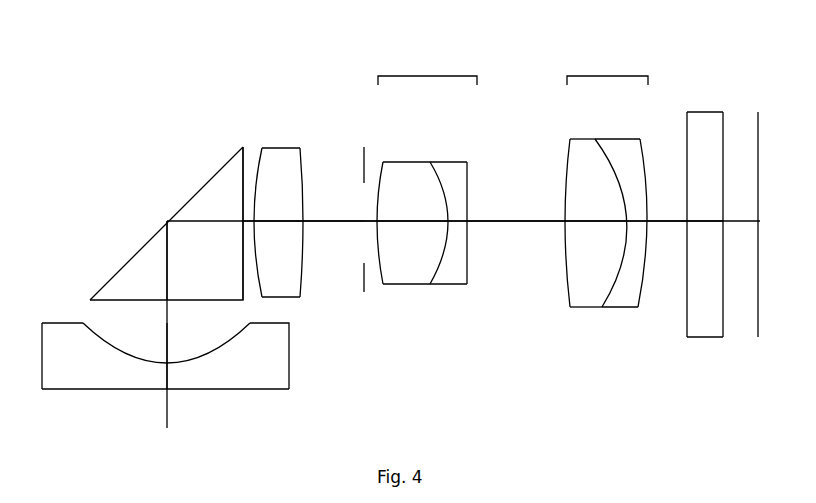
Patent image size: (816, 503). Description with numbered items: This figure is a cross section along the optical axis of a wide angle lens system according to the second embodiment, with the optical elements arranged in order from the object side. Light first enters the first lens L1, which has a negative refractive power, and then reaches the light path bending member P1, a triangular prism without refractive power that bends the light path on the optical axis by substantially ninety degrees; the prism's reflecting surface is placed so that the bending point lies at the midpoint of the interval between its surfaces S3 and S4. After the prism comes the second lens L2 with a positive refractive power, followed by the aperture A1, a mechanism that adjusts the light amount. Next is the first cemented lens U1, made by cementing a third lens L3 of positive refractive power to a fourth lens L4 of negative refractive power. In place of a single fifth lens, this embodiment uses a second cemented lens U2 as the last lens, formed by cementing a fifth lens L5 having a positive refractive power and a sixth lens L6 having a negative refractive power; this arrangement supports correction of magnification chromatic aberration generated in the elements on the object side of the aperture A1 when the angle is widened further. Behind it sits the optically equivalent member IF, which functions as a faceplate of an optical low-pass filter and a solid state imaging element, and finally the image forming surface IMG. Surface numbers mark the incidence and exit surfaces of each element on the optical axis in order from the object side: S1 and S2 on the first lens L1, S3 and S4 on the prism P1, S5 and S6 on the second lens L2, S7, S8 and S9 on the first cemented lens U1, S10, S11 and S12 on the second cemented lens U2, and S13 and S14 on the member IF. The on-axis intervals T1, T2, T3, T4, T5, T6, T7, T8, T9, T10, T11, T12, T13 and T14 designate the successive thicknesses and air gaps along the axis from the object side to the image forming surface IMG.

The first lens L1 is at (194, 386).
The second lens L2 is at (281, 182).
The third lens L3 is at (401, 239).
The fourth lens L4 is at (474, 239).
The fifth lens L5 is at (581, 237).
The sixth lens L6 is at (638, 239).
The light path bending member P1 is at (172, 191).
The aperture A1 is at (340, 190).
The first cemented lens U1 is at (460, 199).
The second cemented lens U2 is at (611, 207).
The optically equivalent member IF is at (706, 229).
The image forming surface IMG is at (758, 112).
The surface number S1 is at (253, 390).
The surface number S2 is at (135, 362).
The surface number S3 is at (131, 296).
The surface number S4 is at (243, 192).
The surface number S5 is at (254, 168).
The surface number S6 is at (306, 168).
The surface number S7 is at (383, 286).
The surface number S8 is at (432, 286).
The surface number S9 is at (467, 286).
The surface number S10 is at (565, 277).
The surface number S11 is at (610, 293).
The surface number S12 is at (645, 280).
The surface number S13 is at (687, 325).
The surface number S14 is at (723, 318).
The on-axis interval T1 is at (167, 381).
The on-axis interval T2 is at (167, 334).
The on-axis interval T3 is at (167, 272).
The on-axis interval T4 is at (240, 219).
The on-axis interval T5 is at (281, 222).
The on-axis interval T6 is at (344, 222).
The on-axis interval T7 is at (376, 221).
The on-axis interval T8 is at (407, 222).
The on-axis interval T9 is at (467, 221).
The on-axis interval T10 is at (516, 222).
The on-axis interval T11 is at (585, 222).
The on-axis interval T12 is at (638, 223).
The on-axis interval T13 is at (668, 221).
The on-axis interval T14 is at (700, 222).